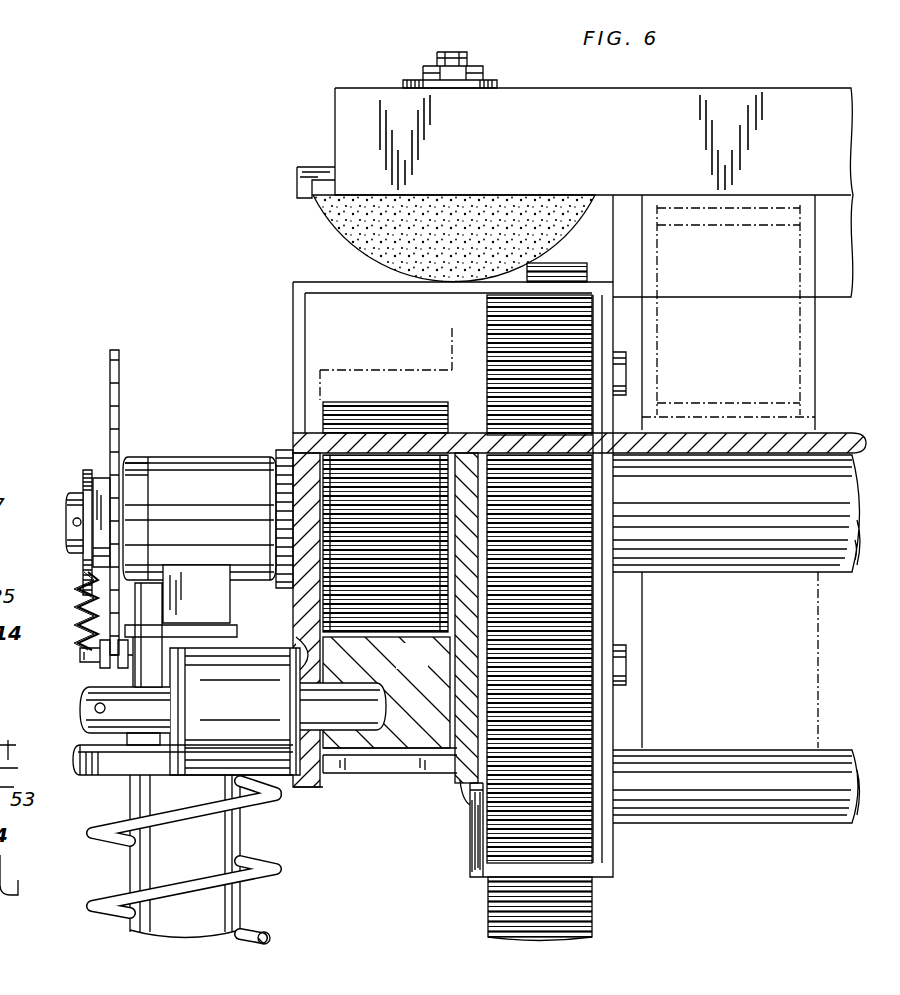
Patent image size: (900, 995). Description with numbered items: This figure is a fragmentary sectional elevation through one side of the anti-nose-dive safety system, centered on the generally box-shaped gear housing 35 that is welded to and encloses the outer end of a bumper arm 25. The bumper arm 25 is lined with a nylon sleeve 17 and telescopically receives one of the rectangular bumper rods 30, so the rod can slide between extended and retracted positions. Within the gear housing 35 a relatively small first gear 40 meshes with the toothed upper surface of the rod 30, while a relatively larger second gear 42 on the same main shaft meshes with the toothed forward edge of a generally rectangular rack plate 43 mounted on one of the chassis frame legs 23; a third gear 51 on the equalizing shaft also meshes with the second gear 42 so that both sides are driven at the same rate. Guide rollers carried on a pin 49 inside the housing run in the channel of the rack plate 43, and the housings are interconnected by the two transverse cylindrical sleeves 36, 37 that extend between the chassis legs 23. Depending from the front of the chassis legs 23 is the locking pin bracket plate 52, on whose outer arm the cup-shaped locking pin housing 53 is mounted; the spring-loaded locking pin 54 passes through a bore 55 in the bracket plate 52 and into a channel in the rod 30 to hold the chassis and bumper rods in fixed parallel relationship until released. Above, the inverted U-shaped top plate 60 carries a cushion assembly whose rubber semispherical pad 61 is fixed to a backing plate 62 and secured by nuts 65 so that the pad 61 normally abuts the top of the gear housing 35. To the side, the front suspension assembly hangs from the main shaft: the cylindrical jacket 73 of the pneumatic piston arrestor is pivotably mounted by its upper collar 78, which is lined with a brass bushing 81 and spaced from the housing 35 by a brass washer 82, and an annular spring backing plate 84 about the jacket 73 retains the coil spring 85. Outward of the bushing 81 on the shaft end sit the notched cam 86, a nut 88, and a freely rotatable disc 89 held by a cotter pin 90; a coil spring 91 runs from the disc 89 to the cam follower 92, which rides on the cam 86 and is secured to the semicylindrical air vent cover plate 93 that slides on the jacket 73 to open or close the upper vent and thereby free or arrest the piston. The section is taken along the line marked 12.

The section line 12 is at (450, 40).
The top plate 60 is at (786, 98).
The nuts 65 is at (492, 74).
The backing plate 62 is at (296, 170).
The rubber semispherical pad 61 is at (320, 226).
The rack plates 43 is at (578, 268).
The gear housing 35 is at (350, 780).
The second gears 42 is at (500, 320).
The pin 49 is at (626, 372).
The frame legs 23 is at (808, 382).
The first gears 40 is at (296, 440).
The locking pin bracket plate 52 is at (860, 433).
The bore 55 is at (303, 660).
The rods 30 is at (424, 666).
The nylon sleeve 17 is at (442, 708).
The locking pin housing 53 is at (240, 706).
The locking pin 54 is at (82, 717).
The spring backing plate 84 is at (92, 778).
The jacket 73 is at (128, 930).
The coil spring 85 is at (280, 872).
The bumper arms 25 is at (392, 762).
The third gears 51 is at (506, 816).
The sleeve 36 is at (835, 574).
The sleeve 37 is at (782, 812).
The collar 78 is at (190, 457).
The brass bushing 81 is at (137, 457).
The brass washer 82 is at (272, 455).
The cam 86 is at (110, 386).
The nut 88 is at (105, 477).
The disc 89 is at (82, 478).
The cotter pin 90 is at (77, 520).
The coil spring 91 is at (78, 600).
The cam follower 92 is at (88, 660).
The air vent cover plate 93 is at (168, 628).